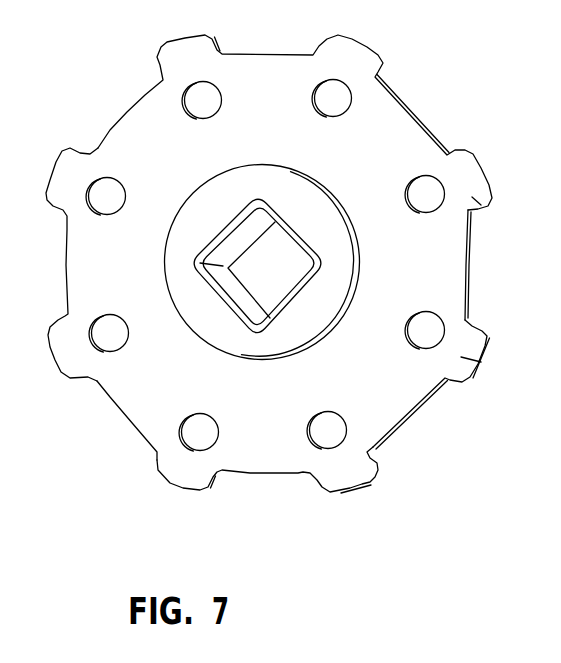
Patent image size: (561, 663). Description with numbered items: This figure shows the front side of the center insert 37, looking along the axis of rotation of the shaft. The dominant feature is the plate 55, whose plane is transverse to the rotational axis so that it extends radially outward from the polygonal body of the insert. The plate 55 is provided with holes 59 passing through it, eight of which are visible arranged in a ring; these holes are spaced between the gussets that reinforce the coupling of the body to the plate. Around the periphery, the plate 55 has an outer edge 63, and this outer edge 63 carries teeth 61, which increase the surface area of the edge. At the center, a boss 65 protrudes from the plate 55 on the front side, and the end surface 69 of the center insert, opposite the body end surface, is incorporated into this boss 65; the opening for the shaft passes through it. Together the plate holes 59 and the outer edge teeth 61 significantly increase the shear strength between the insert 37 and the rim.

The center insert 37 is at (269, 264).
The plate 55 is at (106, 420).
The holes 59 is at (265, 318).
The teeth 61 is at (502, 279).
The outer edge 63 is at (431, 402).
The boss 65 is at (266, 180).
The end surface 69 is at (333, 218).